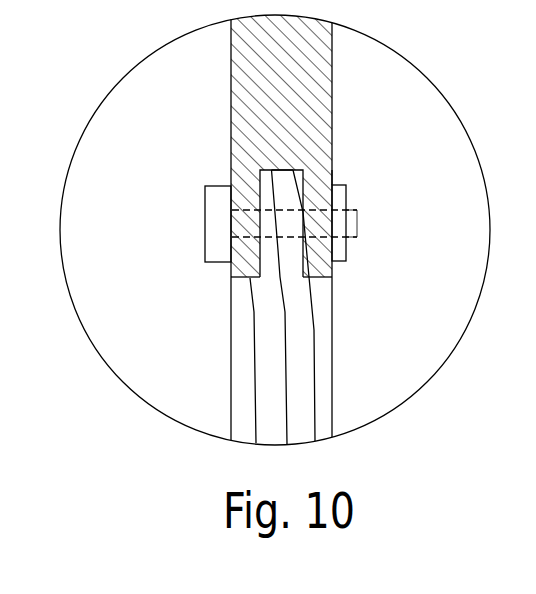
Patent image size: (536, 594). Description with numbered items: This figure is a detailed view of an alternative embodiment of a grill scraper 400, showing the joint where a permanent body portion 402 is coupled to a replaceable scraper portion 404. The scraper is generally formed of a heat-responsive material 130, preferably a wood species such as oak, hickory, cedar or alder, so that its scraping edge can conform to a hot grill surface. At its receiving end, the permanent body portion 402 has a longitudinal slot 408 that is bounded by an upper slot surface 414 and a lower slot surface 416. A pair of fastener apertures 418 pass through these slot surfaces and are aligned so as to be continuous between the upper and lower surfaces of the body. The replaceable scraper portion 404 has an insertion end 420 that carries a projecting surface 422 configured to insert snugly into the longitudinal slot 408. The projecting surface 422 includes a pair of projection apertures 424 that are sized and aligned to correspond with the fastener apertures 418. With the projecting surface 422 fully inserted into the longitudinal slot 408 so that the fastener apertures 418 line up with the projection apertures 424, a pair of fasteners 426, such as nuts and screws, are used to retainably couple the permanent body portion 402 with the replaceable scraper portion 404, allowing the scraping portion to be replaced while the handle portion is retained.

The grill scraper 400 is at (340, 92).
The permanent body portion 402 is at (231, 90).
The replaceable scraper portion 404 is at (332, 332).
The longitudinal slot 408 is at (334, 170).
The heat-responsive material 130 is at (305, 410).
The upper slot surface 414 is at (246, 274).
The lower slot surface 416 is at (318, 274).
The fastener apertures 418 is at (248, 228).
The insertion end 420 is at (290, 168).
The projecting surface 422 is at (267, 192).
The projection apertures 424 is at (286, 218).
The fasteners 426 is at (210, 210).